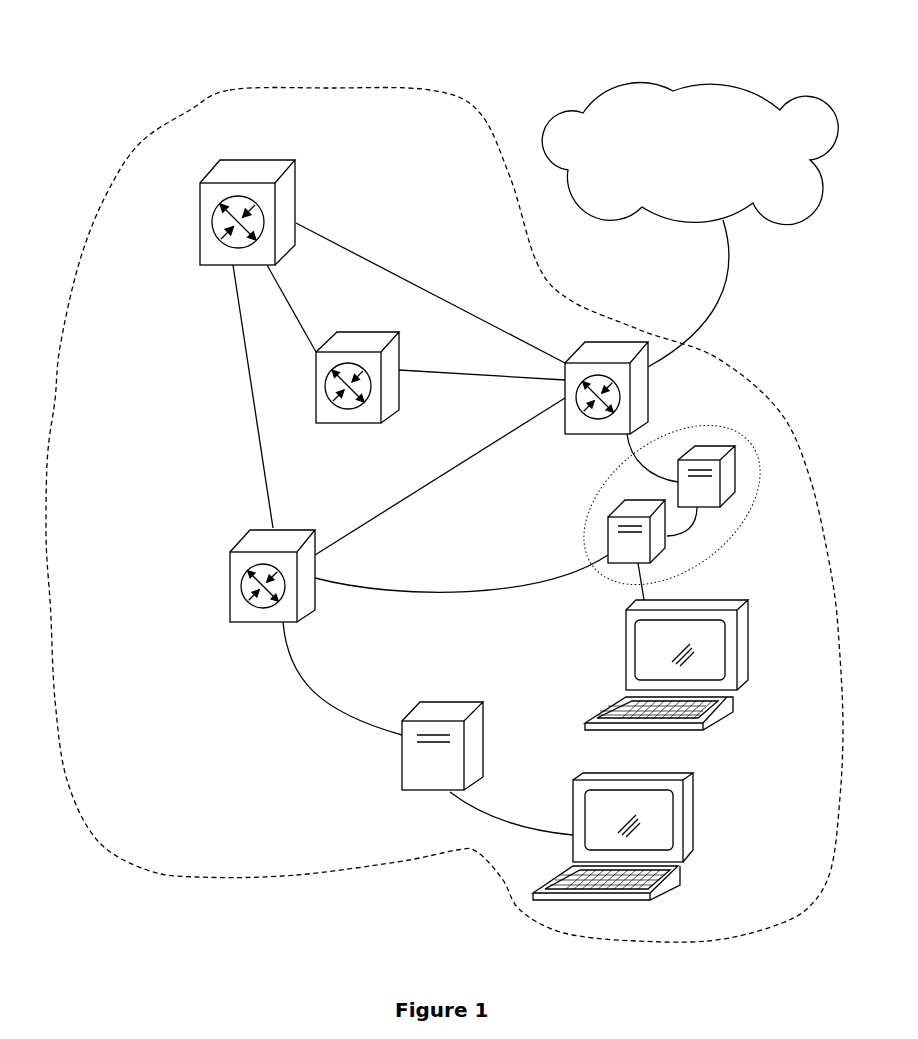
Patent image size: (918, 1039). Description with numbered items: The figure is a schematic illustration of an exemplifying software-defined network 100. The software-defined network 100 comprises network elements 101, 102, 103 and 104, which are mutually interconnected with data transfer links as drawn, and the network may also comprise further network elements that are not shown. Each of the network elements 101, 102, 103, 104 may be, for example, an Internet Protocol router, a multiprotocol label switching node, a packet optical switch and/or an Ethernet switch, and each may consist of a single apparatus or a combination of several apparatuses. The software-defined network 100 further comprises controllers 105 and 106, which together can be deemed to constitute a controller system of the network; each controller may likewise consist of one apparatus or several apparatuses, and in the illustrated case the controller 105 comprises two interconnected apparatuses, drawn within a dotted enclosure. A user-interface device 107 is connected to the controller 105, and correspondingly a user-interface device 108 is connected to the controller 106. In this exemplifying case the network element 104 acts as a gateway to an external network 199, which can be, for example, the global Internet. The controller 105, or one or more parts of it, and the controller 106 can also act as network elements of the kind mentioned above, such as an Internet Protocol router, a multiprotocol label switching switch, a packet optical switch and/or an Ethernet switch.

The software-defined network 100 is at (340, 88).
The network element 101 is at (202, 264).
The network element 102 is at (345, 424).
The network element 103 is at (228, 604).
The network element 104 is at (572, 438).
The controller 105 is at (612, 586).
The controller 106 is at (432, 708).
The user-interface device 107 is at (735, 602).
The user-interface device 108 is at (695, 801).
The external network 199 is at (708, 161).